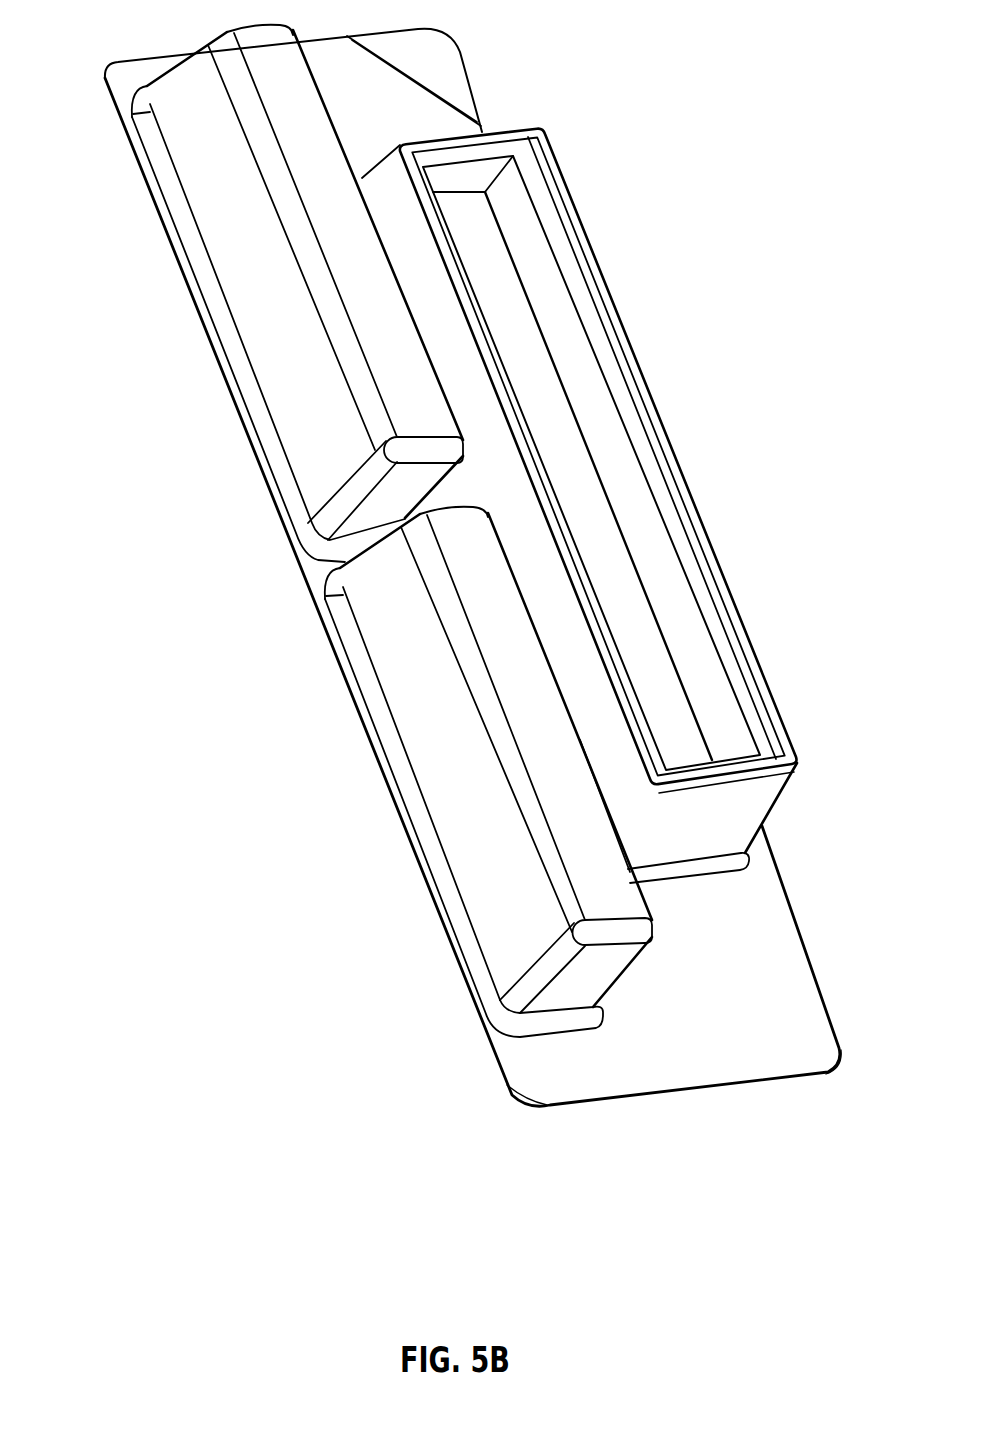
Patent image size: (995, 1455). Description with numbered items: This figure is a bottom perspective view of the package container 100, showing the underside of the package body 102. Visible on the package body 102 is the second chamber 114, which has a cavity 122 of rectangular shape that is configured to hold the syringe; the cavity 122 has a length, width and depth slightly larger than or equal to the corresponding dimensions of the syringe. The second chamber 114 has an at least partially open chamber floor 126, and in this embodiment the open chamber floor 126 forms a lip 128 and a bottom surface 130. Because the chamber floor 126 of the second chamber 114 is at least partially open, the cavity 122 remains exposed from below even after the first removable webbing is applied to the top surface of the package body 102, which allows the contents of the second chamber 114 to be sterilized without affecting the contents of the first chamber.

The assembly 100 is at (448, 554).
The package body 102 is at (293, 561).
The second chamber 114 is at (588, 506).
The cavity 122 is at (596, 412).
The at least partially open chamber floor 126 is at (558, 508).
The lip 128 is at (557, 195).
The bottom surface 130 is at (575, 280).